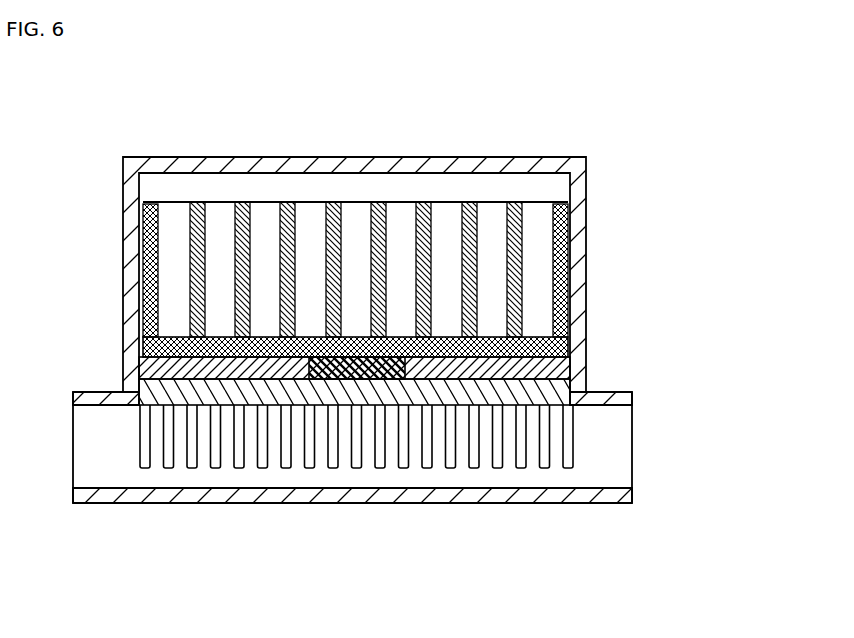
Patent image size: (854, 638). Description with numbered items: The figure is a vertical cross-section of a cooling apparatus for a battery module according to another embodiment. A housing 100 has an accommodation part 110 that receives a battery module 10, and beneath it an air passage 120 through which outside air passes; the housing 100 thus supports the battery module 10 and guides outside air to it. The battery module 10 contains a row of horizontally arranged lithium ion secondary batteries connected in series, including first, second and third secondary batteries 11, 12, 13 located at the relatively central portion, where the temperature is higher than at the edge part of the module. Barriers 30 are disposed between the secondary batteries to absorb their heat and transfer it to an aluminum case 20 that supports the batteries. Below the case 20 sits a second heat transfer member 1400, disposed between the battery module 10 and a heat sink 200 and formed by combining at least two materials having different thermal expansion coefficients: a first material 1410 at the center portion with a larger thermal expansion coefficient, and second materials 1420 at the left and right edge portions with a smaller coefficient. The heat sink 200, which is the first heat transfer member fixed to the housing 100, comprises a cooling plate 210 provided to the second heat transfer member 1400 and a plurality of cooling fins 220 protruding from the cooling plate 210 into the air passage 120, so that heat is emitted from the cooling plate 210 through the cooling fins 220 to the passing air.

The housing 100 is at (398, 240).
The accommodation part 110 is at (586, 256).
The battery module 10 is at (355, 215).
The first secondary battery 11 is at (357, 202).
The second secondary battery 12 is at (310, 202).
The third secondary battery 13 is at (400, 202).
The barriers 30 is at (240, 294).
The case 20 is at (140, 345).
The second heat transfer member 1400 is at (396, 463).
The second materials 1420 is at (178, 372).
The first material 1410 is at (385, 380).
The heat sink 200 is at (356, 500).
The cooling plate 210 is at (321, 397).
The cooling fins 220 is at (372, 446).
The air passage 120 is at (617, 450).